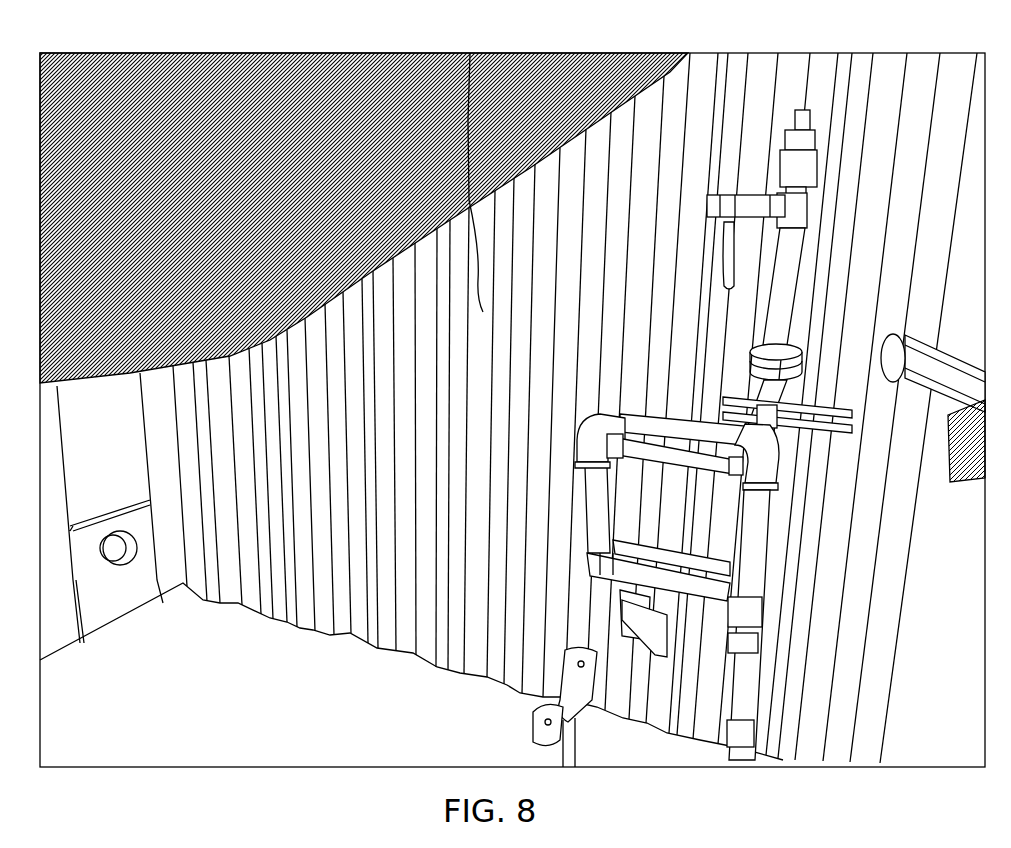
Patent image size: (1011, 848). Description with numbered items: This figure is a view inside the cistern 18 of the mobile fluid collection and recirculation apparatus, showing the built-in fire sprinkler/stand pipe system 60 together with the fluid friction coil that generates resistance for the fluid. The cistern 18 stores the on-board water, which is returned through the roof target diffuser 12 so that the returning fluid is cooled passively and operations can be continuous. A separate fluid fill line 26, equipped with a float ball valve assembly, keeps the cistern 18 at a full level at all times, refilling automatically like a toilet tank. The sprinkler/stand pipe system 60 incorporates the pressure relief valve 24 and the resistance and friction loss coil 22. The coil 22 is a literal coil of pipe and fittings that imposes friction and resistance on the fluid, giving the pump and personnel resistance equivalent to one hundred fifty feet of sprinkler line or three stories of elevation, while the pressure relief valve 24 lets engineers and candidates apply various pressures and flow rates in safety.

The roof target diffuser 12 is at (249, 70).
The fluid fill line 26 is at (471, 53).
The cistern 18 is at (122, 458).
The pressure relief valve 24 is at (733, 196).
The sprinkler/stand pipe system 60 is at (673, 494).
The resistance and friction loss coil 22 is at (578, 444).